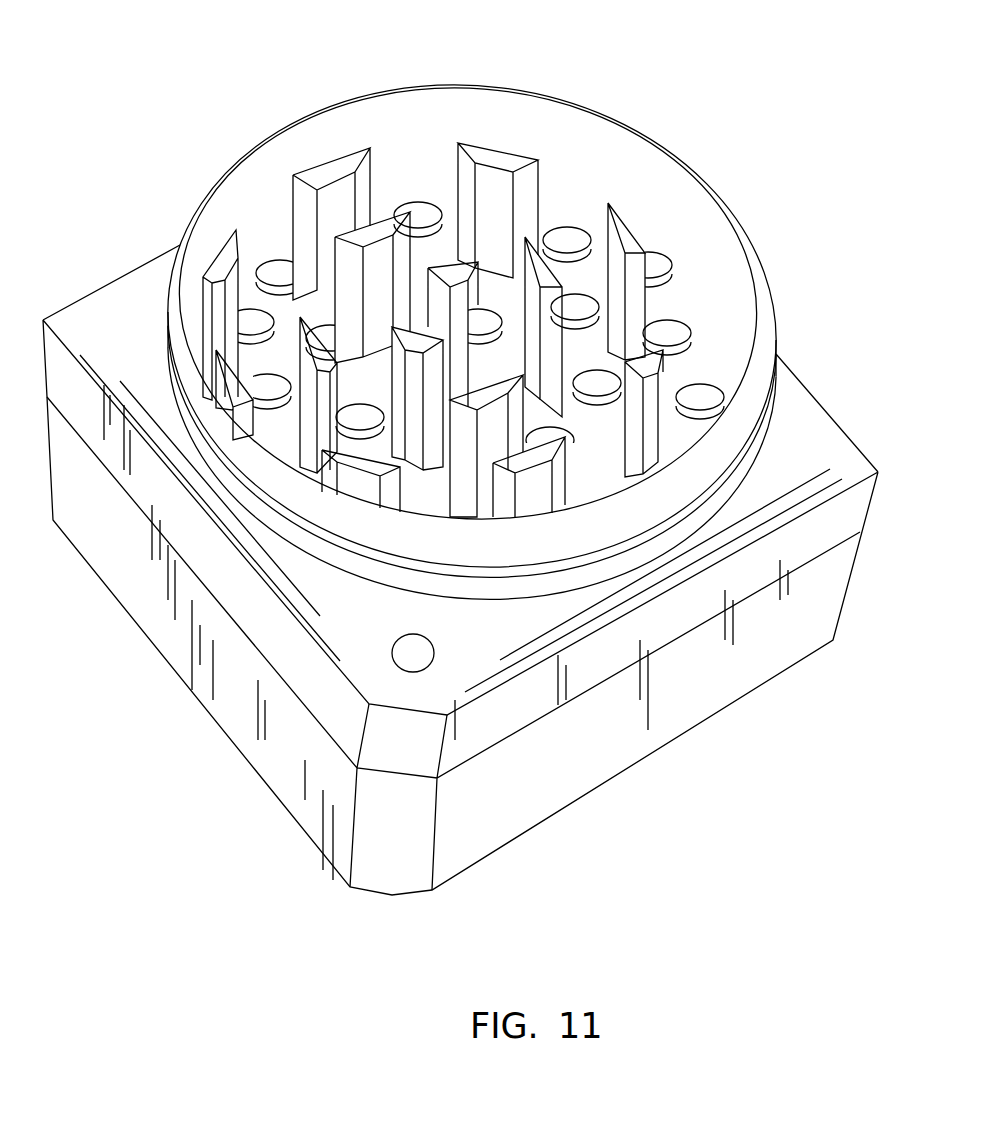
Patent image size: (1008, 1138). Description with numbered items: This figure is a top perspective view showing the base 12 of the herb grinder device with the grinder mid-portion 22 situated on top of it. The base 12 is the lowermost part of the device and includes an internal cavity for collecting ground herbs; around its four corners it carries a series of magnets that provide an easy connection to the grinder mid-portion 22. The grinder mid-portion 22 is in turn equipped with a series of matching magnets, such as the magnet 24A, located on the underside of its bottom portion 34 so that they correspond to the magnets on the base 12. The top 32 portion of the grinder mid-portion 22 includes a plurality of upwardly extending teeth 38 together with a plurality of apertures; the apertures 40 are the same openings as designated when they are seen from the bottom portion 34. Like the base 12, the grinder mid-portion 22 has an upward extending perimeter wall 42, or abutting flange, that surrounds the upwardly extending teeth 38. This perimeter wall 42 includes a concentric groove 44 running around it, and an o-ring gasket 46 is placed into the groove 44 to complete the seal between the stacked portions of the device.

The base 12 is at (574, 790).
The grinder mid-portion 22 is at (372, 760).
The magnet 24A is at (413, 668).
The top portion 32 is at (768, 306).
The bottom portion 34 is at (838, 424).
The upwardly extending teeth 38 is at (628, 248).
The apertures 40 is at (656, 266).
The perimeter wall 42 is at (578, 93).
The concentric groove 44 is at (300, 540).
The o-ring gasket 46 is at (707, 510).